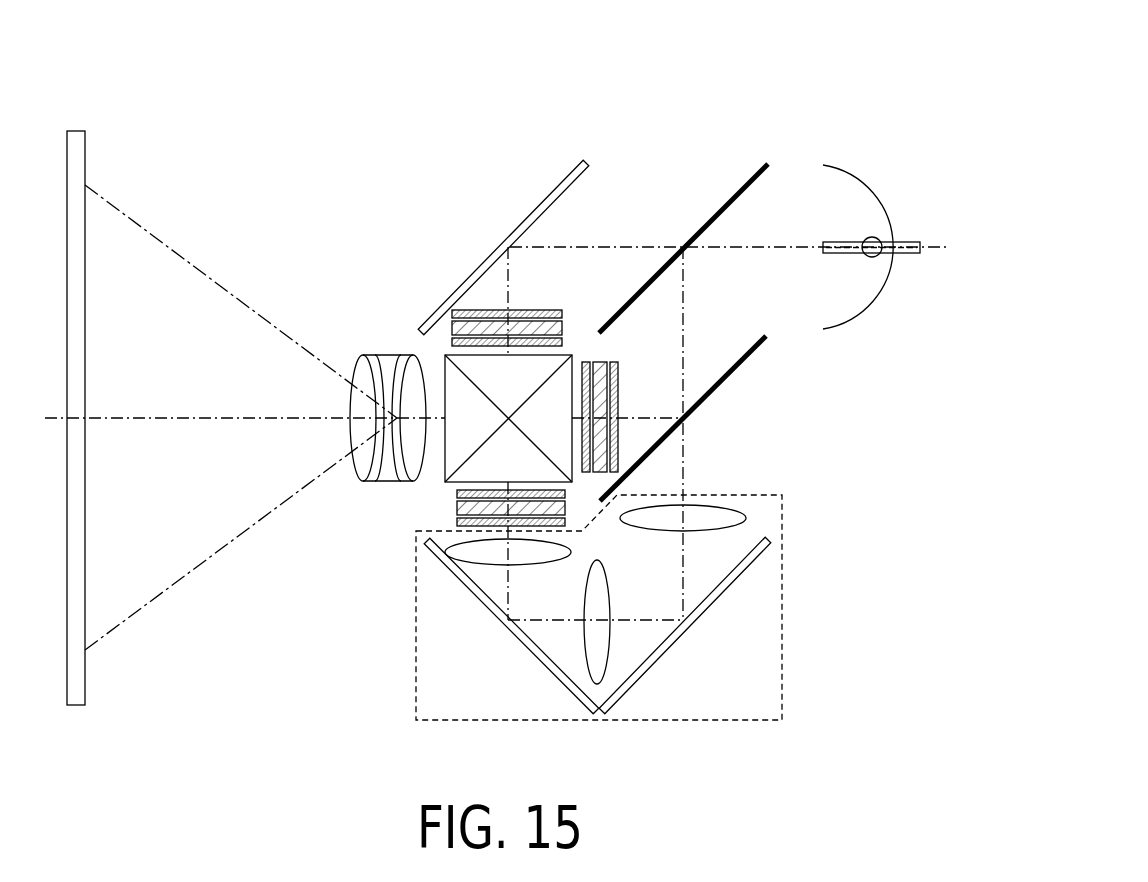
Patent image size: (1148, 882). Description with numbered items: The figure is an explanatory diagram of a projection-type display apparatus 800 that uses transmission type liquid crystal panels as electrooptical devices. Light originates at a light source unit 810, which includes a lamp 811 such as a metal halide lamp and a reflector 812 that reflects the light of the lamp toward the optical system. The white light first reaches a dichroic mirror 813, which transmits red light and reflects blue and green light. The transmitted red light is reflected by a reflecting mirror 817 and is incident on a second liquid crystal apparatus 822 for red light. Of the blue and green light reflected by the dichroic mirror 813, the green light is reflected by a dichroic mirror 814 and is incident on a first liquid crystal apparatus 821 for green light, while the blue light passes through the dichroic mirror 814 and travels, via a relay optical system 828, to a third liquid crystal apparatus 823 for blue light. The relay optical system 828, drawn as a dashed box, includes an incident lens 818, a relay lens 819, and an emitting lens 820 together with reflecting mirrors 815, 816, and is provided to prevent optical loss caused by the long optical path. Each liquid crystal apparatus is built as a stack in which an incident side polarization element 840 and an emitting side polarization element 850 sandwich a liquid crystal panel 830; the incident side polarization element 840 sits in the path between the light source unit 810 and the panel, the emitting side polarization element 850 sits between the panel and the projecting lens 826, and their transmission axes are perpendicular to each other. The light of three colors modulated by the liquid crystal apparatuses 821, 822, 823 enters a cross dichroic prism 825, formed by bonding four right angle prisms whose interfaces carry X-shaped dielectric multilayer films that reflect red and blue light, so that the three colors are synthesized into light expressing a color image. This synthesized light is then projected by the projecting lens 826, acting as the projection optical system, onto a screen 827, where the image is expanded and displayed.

The projection-type display apparatus 800 is at (802, 96).
The light source unit 810 is at (880, 222).
The lamp 811 is at (866, 240).
The reflector 812 is at (880, 192).
The dichroic mirror 813 is at (735, 192).
The dichroic mirror 814 is at (723, 376).
The reflecting mirror 815 is at (668, 652).
The reflecting mirror 816 is at (528, 658).
The reflecting mirror 817 is at (550, 193).
The incident lens 818 is at (718, 506).
The relay lens 819 is at (606, 587).
The emitting lens 820 is at (543, 556).
The first liquid crystal apparatus 821 is at (625, 357).
The second liquid crystal apparatus 822 is at (432, 258).
The third liquid crystal apparatus 823 is at (437, 513).
The cross dichroic prism 825 is at (574, 349).
The projecting lens 826 is at (432, 483).
The screen 827 is at (77, 131).
The relay optical system 828 is at (783, 619).
The liquid crystal panel 830 is at (452, 327).
The incident side polarization element 840 is at (472, 310).
The emitting side polarization element 850 is at (452, 345).